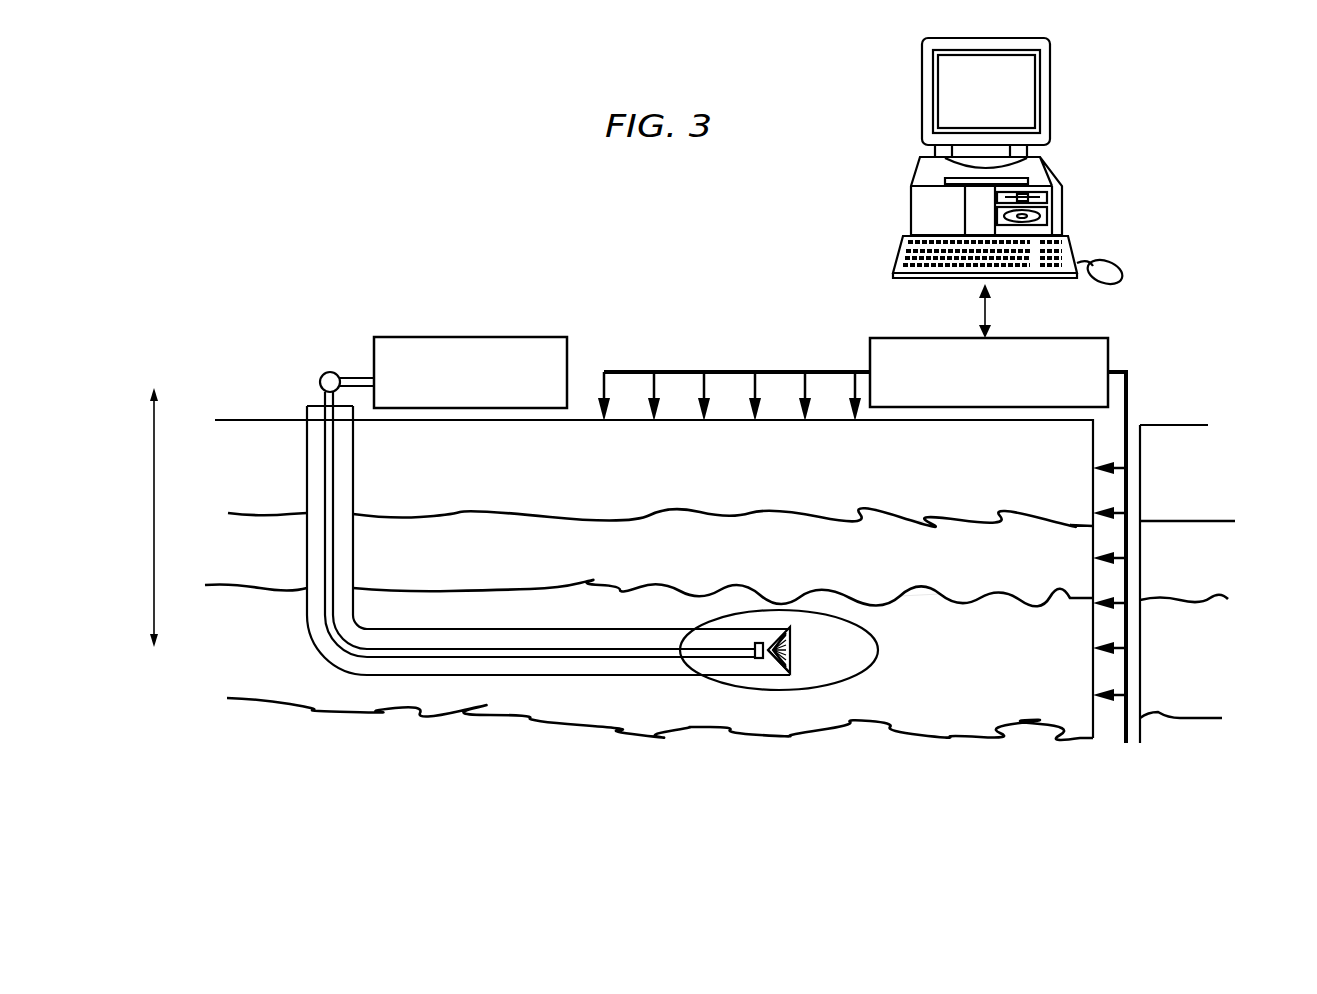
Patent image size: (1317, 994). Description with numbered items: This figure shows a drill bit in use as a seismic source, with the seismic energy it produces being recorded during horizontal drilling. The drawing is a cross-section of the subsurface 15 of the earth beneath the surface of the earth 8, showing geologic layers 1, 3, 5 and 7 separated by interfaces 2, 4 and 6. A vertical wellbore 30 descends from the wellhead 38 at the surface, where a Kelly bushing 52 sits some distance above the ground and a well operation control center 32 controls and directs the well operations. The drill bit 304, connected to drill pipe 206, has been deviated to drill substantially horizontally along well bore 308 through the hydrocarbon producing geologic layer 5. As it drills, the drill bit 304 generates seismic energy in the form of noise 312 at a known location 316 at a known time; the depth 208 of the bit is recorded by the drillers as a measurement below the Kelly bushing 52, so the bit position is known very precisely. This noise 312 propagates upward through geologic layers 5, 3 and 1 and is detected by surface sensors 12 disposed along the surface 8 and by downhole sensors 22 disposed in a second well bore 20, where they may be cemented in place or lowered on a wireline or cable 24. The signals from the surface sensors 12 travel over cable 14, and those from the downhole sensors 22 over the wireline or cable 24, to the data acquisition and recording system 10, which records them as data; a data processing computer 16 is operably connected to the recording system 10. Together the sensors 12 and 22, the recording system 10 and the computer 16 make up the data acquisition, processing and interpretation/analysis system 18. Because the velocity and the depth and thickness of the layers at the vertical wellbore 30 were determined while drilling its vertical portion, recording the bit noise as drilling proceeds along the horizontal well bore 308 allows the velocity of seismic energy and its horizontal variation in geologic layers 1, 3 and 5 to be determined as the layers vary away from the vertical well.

The geologic layer 1 is at (829, 496).
The interface 2 is at (937, 522).
The geologic layer 3 is at (829, 567).
The interface 4 is at (937, 599).
The geologic layer 5 is at (829, 671).
The interface 6 is at (946, 742).
The geologic layer 7 is at (829, 801).
The surface of the earth 8 is at (209, 417).
The data acquisition and recording system 10 is at (1108, 352).
The surface sensors 12 is at (598, 434).
The cable 14 is at (733, 372).
The subsurface 15 is at (1248, 485).
The data processing computer 16 is at (1058, 170).
The data acquisition, processing and interpretation/analysis system 18 is at (1216, 164).
The well bore 20 is at (1134, 547).
The downhole sensors 22 is at (1070, 462).
The wireline or cable 24 is at (1130, 400).
The wellbore 30 is at (312, 464).
The well operation control center 32 is at (456, 337).
The wellhead 38 is at (308, 405).
The Kelly bushing 52 is at (329, 372).
The drill pipe 206 is at (334, 469).
The depth 208 is at (154, 492).
The drill bit 304 is at (790, 657).
The well bore 308 is at (585, 675).
The noise 312 is at (872, 668).
The known location 316 is at (789, 672).